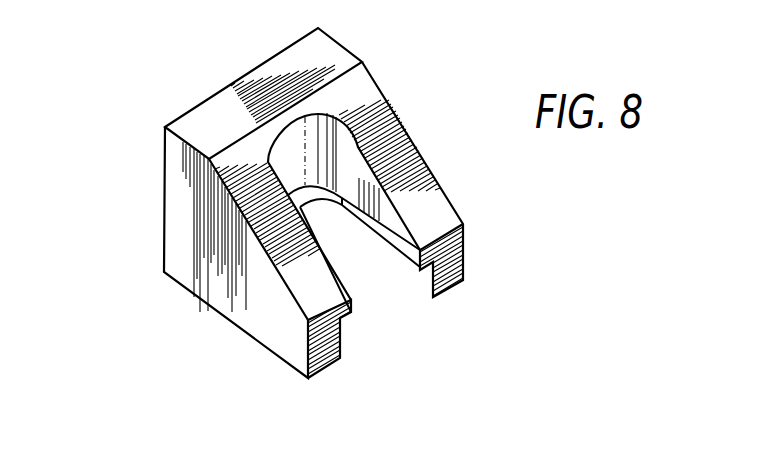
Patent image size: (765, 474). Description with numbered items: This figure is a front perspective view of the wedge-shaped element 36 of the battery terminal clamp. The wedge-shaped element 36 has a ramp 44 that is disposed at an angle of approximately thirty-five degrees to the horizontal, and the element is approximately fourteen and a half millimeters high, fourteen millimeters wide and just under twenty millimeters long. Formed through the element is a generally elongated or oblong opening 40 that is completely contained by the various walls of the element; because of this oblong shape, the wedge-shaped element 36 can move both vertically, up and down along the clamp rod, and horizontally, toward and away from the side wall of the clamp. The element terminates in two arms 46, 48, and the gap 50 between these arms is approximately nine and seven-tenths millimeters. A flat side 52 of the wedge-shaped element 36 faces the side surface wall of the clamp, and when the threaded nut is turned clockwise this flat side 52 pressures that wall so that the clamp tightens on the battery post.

The wedge-shaped element 36 is at (122, 131).
The ramp 44 is at (247, 157).
The elongated or oblong opening 40 is at (343, 160).
The flat side 52 is at (165, 245).
The arm 46 is at (320, 348).
The arm 48 is at (443, 268).
The gap 50 is at (385, 293).